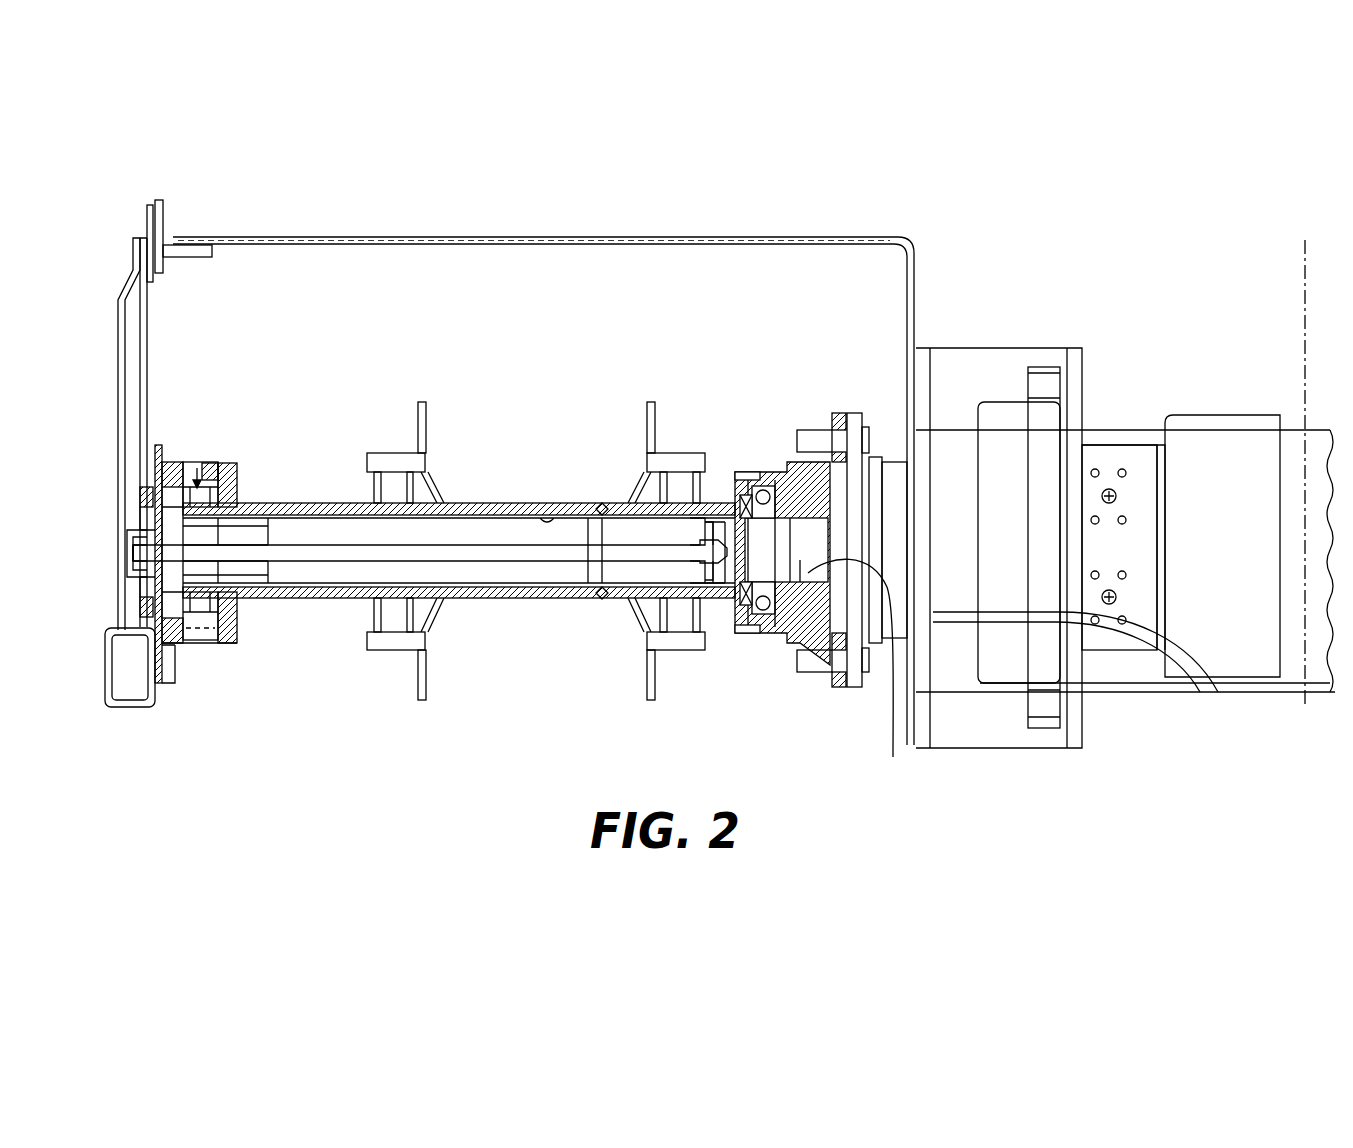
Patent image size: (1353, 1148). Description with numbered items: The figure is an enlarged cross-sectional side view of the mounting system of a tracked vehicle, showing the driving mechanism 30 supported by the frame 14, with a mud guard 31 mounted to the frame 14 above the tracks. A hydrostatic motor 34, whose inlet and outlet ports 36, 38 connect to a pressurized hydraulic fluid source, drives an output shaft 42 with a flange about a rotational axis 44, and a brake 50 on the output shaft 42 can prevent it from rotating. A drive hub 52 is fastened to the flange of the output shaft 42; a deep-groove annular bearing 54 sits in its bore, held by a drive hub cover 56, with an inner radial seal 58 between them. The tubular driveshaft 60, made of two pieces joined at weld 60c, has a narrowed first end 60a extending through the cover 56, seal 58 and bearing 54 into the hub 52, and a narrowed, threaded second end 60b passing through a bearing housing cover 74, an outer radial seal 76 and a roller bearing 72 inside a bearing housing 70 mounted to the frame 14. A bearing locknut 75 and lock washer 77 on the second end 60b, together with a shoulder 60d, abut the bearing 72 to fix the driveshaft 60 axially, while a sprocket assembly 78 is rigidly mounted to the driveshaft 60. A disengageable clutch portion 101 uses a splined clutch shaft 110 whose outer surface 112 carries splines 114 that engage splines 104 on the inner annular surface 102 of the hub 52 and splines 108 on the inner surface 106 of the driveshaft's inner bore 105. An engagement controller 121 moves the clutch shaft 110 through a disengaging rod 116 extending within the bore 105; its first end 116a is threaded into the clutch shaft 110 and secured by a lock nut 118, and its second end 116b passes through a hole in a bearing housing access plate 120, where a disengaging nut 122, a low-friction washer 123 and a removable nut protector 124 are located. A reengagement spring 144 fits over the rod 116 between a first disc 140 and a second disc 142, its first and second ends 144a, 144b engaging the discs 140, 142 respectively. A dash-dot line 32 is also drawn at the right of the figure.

The driving mechanism 30 is at (380, 182).
The mud guard 31 is at (466, 237).
The frame 14 is at (123, 283).
The bearing housing access plate 120 is at (153, 478).
The bearing locknut 75 is at (150, 597).
The removable nut protector 124 is at (127, 538).
The disengaging nut 122 is at (131, 563).
The low-friction washer 123 is at (137, 578).
The engagement controller 121 is at (90, 516).
The second disc 142 is at (170, 683).
The second end of driveshaft 60b is at (180, 468).
The roller bearing 72 is at (218, 468).
The bearing housing cover 74 is at (265, 475).
The shoulder 60d is at (226, 472).
The bearing housing 70 is at (195, 465).
The outer radial seal 76 is at (262, 487).
The lock washer 77 is at (187, 641).
The reengagement spring 144 is at (245, 506).
The first end of spring 144a is at (203, 553).
The second end of spring 144b is at (180, 642).
The first disc 140 is at (273, 527).
The driveshaft 60 is at (493, 503).
The inner surface 106 is at (547, 505).
The inner bore 105 is at (527, 583).
The weld 60c is at (602, 503).
The sprocket assembly 78 is at (425, 700).
The disengaging rod 116 is at (456, 562).
The first end of disengaging rod 116a is at (712, 528).
The second end of disengaging rod 116b is at (222, 575).
The lock nut 118 is at (690, 540).
The splines 108 is at (695, 568).
The outer surface 112 is at (723, 520).
The splines 114 is at (737, 481).
The drive hub 52 is at (835, 413).
The first end of driveshaft 60a is at (762, 490).
The bearing 54 is at (773, 505).
The drive hub cover 56 is at (740, 472).
The inner radial seal 58 is at (743, 628).
The clutch shaft 110 is at (787, 600).
The disengageable clutch portion 101 is at (784, 652).
The inner annular surface 102 is at (852, 672).
The splines 104 is at (868, 673).
The output shaft 42 is at (852, 413).
The rotational axis 44 is at (903, 548).
The hydrostatic motor 34 is at (1115, 432).
The inlet port 36 is at (1117, 496).
The outlet port 38 is at (1117, 597).
The brake 50 is at (1212, 450).
The centerline 32 is at (1303, 300).